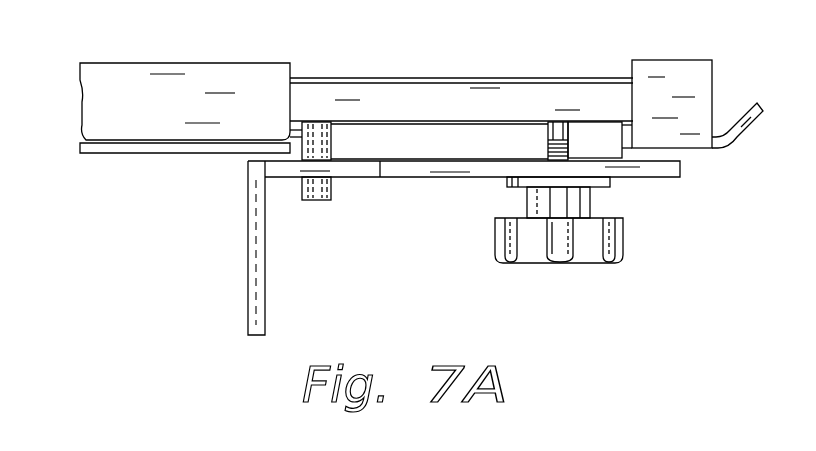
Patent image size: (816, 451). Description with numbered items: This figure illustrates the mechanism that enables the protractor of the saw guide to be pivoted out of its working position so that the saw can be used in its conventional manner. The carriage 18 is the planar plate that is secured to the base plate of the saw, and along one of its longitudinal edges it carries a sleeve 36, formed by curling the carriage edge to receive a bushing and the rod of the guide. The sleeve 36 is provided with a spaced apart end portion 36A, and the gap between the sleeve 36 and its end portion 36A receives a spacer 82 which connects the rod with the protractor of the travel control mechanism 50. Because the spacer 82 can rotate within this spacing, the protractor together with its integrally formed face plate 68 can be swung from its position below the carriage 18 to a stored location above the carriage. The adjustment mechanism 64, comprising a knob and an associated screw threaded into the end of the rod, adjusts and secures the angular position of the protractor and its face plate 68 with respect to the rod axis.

The carriage 18 is at (175, 147).
The sleeve 36 is at (257, 73).
The spaced apart end portion of the sleeve 36A is at (635, 63).
The travel control mechanism 50 is at (485, 173).
The adjustment mechanism 64 is at (630, 247).
The protractor face plate 68 is at (263, 272).
The spacer 82 is at (423, 145).